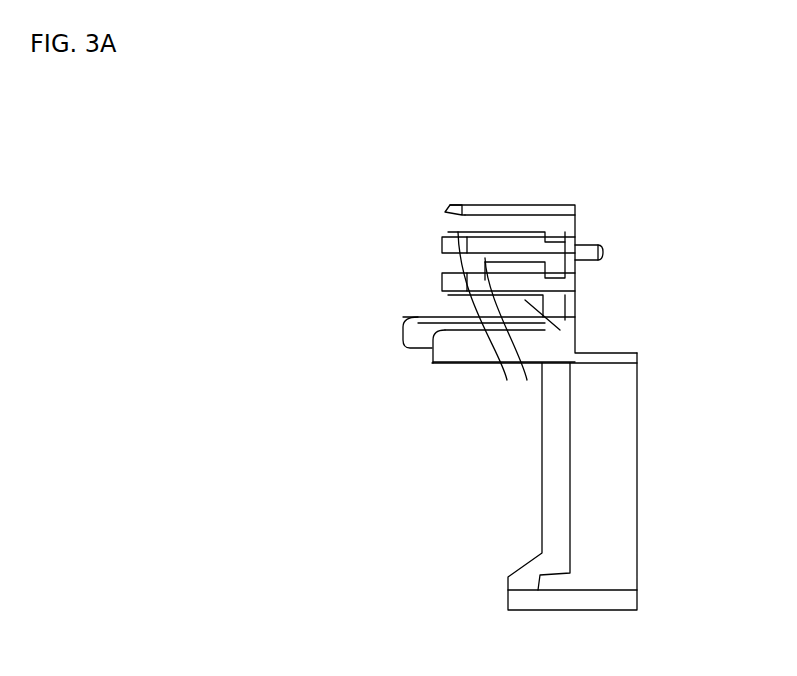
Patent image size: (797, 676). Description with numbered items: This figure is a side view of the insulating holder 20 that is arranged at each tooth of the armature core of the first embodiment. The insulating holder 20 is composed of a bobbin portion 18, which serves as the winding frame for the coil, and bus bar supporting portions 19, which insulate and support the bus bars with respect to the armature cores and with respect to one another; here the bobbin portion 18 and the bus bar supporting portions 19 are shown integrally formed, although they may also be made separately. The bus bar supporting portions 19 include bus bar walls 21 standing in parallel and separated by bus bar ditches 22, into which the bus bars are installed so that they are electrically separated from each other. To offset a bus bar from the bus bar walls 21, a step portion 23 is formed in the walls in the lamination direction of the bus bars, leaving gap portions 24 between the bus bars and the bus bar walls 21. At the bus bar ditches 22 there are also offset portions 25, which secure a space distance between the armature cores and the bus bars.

The bobbin portion 18 is at (603, 468).
The bus bar supporting portions 19 is at (605, 210).
The insulating holder 20 is at (193, 180).
The bus bar walls 21 is at (490, 225).
The bus bar ditches 22 is at (450, 303).
The step portion 23 is at (560, 330).
The gap portions 24 is at (527, 380).
The offset portions 25 is at (557, 263).